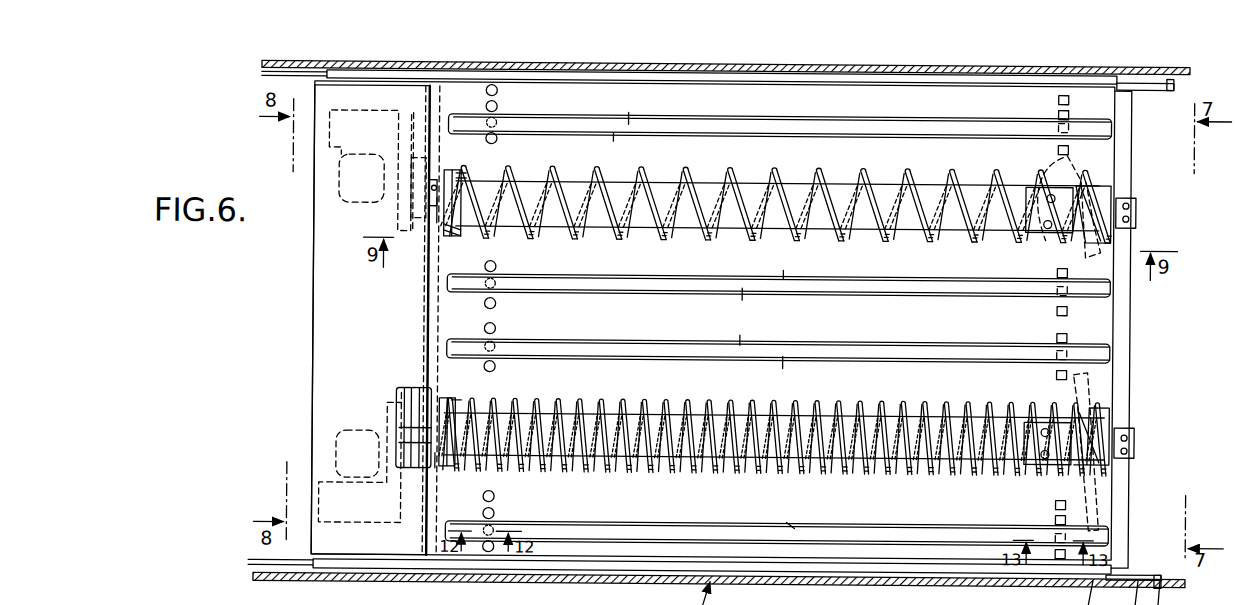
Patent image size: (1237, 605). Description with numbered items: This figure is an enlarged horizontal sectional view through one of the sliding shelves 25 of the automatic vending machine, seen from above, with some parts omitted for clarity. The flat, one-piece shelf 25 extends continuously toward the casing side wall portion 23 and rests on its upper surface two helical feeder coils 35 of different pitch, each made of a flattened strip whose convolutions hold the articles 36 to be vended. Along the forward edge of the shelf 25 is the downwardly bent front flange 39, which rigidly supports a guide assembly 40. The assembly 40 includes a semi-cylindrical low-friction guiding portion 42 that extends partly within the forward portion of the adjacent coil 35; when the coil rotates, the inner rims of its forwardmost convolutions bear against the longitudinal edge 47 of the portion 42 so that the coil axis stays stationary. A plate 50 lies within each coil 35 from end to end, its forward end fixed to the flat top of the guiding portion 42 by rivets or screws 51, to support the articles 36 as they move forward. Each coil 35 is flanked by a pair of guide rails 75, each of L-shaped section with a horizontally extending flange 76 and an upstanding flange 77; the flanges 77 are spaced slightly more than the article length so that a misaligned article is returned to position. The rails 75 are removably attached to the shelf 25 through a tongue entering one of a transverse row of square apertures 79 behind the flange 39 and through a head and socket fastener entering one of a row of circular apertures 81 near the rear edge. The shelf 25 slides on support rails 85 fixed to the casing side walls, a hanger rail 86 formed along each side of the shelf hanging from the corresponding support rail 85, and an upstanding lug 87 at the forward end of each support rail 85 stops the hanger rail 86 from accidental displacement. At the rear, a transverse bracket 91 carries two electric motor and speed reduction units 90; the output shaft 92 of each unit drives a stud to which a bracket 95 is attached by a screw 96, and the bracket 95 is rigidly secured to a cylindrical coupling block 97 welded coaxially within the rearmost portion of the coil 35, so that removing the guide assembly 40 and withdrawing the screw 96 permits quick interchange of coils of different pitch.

The side wall portion 23 is at (805, 65).
The shelf 25 is at (1003, 98).
The helical feeder coil 35 is at (738, 172).
The article 36 is at (1082, 158).
The front flange 39 is at (1128, 513).
The guide assembly 40 is at (1137, 207).
The guiding portion 42 is at (1086, 210).
The longitudinal edge 47 is at (1053, 184).
The plate 50 is at (775, 326).
The rivets or screws 51 is at (1046, 228).
The guide rail 75 is at (717, 120).
The horizontally extending flange 76 is at (687, 218).
The upstanding flange 77 is at (697, 331).
The square aperture 79 is at (1068, 336).
The circular aperture 81 is at (496, 325).
The support rail 85 is at (1140, 80).
The hanger rail 86 is at (1090, 80).
The upstanding lug 87 is at (1168, 76).
The electric motor and speed reduction unit 90 is at (350, 206).
The bracket 91 is at (313, 327).
The output shaft 92 is at (412, 210).
The bracket 95 is at (447, 200).
The screw 96 is at (440, 222).
The cylindrical coupling block 97 is at (466, 176).